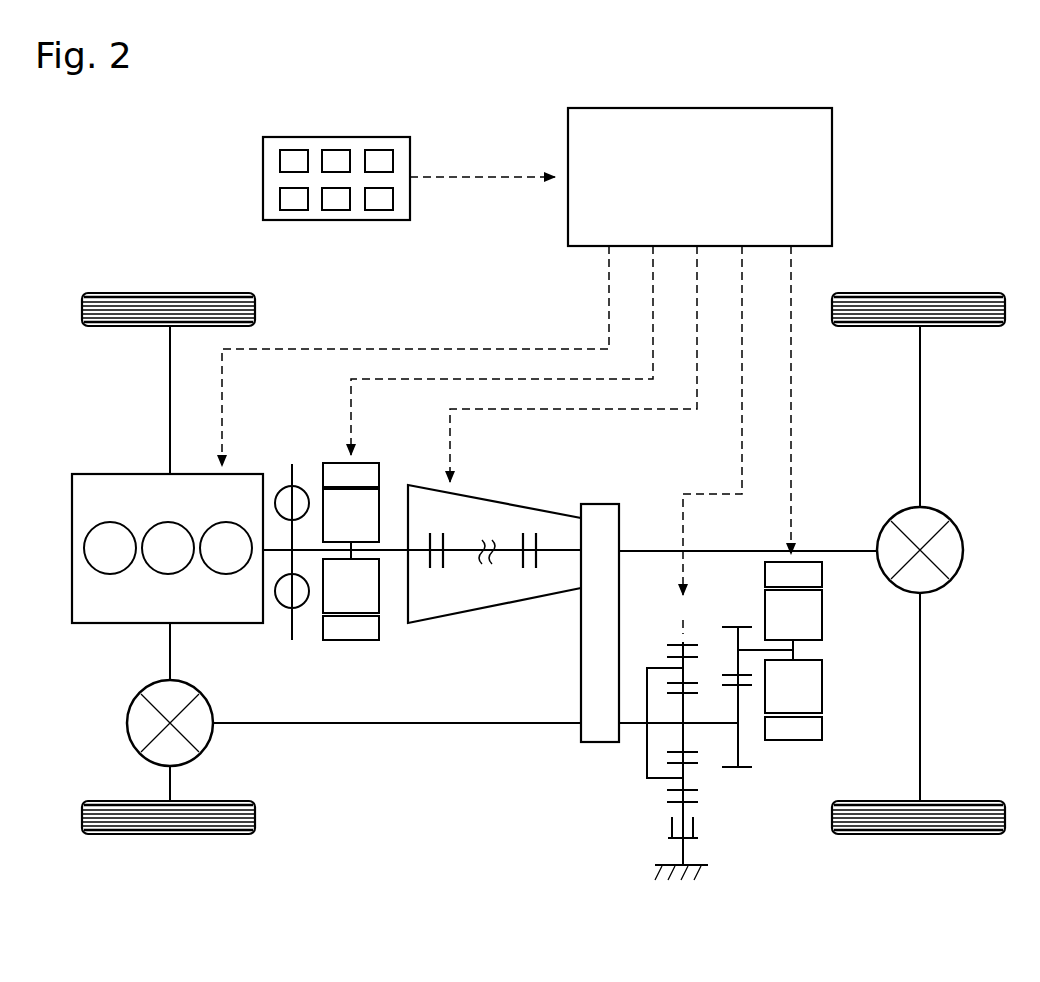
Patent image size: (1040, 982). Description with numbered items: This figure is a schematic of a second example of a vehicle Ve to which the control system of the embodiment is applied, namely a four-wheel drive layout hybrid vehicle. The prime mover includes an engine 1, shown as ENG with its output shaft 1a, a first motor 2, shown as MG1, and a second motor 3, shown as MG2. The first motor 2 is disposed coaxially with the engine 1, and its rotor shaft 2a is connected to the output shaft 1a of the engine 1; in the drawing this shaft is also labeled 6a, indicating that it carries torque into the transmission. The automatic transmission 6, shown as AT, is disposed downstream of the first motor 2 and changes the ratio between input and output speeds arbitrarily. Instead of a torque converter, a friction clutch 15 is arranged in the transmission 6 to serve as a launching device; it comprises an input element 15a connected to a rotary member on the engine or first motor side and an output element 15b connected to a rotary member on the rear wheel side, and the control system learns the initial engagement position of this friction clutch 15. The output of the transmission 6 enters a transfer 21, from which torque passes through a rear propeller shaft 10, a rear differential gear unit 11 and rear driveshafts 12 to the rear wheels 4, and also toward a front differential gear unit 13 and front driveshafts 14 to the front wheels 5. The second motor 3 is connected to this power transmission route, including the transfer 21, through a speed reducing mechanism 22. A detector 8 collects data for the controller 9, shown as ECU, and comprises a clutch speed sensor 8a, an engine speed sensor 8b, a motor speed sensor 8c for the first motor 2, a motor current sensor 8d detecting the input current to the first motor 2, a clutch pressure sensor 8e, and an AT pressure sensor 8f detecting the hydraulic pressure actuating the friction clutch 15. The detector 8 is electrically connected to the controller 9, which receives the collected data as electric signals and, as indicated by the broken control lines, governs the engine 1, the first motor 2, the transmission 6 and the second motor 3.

The engine 1 is at (110, 474).
The output shaft of the engine 1a is at (272, 555).
The first motor 2 is at (324, 661).
The rotor shaft of the first motor 2a is at (392, 555).
The input shaft of automatic transmission 6a is at (408, 624).
The second motor 3 is at (841, 713).
The rear wheels 4 is at (925, 292).
The front wheels 5 is at (168, 292).
The automatic transmission 6 is at (518, 514).
The detector 8 is at (409, 182).
The clutch speed sensor 8a is at (295, 150).
The engine speed sensor 8b is at (336, 150).
The motor speed sensor 8c is at (382, 150).
The motor current sensor 8d is at (295, 212).
The clutch pressure sensor 8e is at (338, 212).
The AT pressure sensor 8f is at (382, 212).
The controller 9 is at (833, 175).
The rear propeller shaft 10 is at (838, 549).
The rear differential gear unit 11 is at (963, 553).
The rear driveshafts 12 is at (922, 408).
The front differential gear unit 13 is at (127, 725).
The front driveshafts 14 is at (170, 397).
The friction clutch 15 is at (495, 624).
The input element 15a is at (428, 568).
The output element 15b is at (443, 566).
The transfer 21 is at (604, 772).
The speed reducing mechanism 22 is at (740, 815).
The vehicle Ve is at (932, 104).